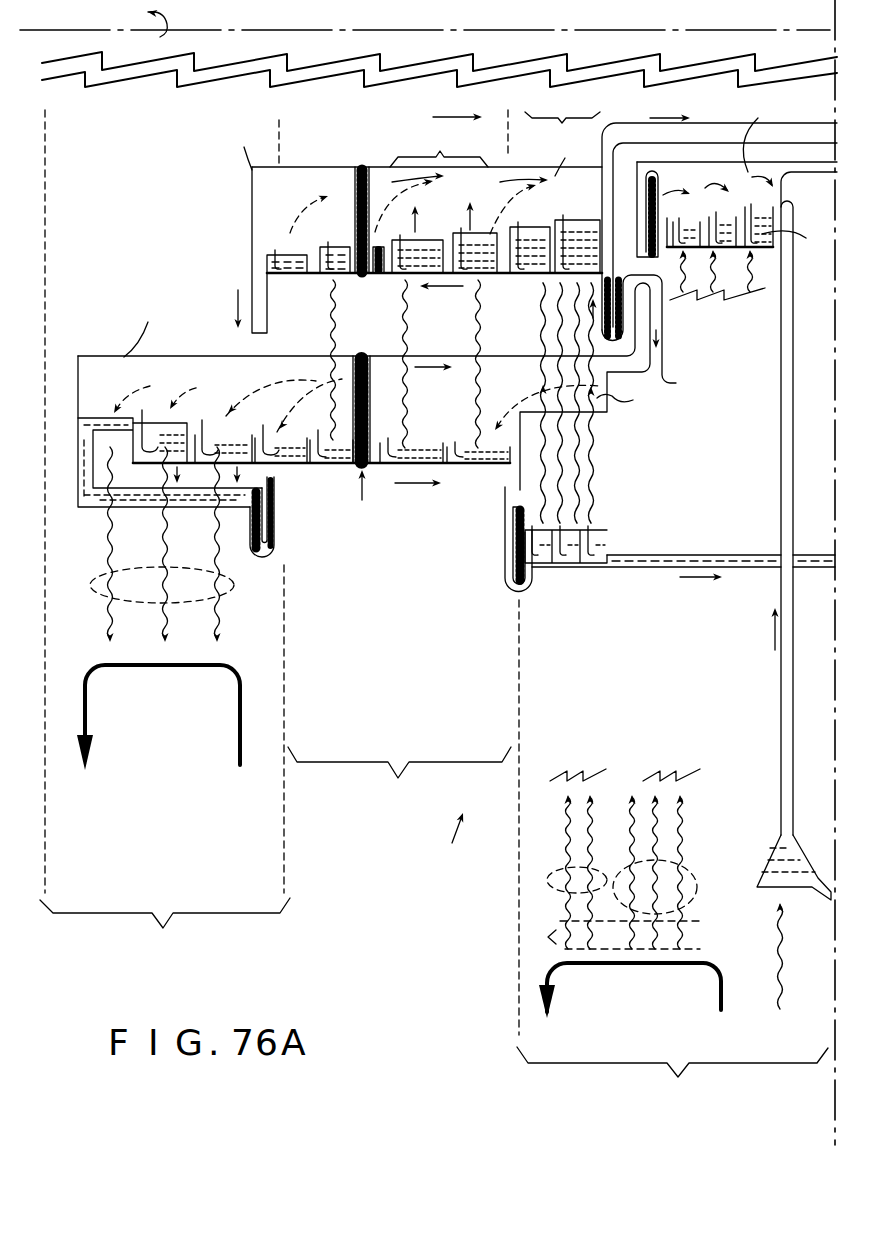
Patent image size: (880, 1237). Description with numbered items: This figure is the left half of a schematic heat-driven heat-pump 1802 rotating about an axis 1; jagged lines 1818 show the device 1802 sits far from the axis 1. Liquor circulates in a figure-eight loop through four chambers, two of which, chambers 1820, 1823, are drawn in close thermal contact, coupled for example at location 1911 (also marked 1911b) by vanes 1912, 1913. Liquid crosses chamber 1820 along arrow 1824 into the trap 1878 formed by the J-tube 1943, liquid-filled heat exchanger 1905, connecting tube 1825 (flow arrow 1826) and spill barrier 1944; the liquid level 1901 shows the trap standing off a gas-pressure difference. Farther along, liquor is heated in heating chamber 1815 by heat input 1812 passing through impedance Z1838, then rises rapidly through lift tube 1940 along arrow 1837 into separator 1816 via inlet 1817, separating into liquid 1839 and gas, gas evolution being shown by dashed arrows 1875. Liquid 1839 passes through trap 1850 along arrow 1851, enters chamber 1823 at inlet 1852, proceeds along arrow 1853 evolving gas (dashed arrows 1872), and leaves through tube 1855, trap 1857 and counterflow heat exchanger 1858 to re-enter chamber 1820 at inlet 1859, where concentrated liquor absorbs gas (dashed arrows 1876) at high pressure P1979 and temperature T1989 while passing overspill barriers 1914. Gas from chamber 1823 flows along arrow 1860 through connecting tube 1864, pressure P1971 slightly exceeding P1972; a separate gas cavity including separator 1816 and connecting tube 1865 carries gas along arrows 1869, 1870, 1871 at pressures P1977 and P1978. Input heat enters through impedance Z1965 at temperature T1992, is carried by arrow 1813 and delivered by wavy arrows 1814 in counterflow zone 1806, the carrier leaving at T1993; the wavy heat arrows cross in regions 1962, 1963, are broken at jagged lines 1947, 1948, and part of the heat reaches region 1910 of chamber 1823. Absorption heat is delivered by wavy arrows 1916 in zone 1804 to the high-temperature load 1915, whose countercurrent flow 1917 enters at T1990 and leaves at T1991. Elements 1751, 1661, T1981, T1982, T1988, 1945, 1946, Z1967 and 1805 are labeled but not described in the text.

The axis 1 is at (136, 32).
The jagged lines 1818 is at (143, 66).
The chamber 1820 is at (193, 292).
The chamber 1823 is at (193, 222).
The vanes 1912 is at (360, 166).
The location 1911 is at (368, 148).
The cup set 1751 is at (470, 197).
The inlet 1852 is at (545, 218).
The dashed arrows 1872 is at (408, 201).
The arrow 1860 is at (452, 107).
The region 1910 is at (562, 108).
The pressure P1972 is at (553, 150).
The temperature point T1982 is at (553, 154).
The pressure P1971 is at (222, 155).
The temperature point T1981 is at (505, 147).
The separator 1816 is at (698, 158).
The arrow 1851 is at (608, 399).
The trap 1850 is at (630, 340).
The connecting tube 1864 is at (827, 144).
The pressure P1977 is at (784, 132).
The flow direction 1661 is at (664, 108).
The arrow 1869 is at (737, 209).
The dashed arrows 1875 is at (719, 234).
The inlet 1817 is at (785, 181).
The liquid 1839 is at (802, 248).
The jagged lines 1947 is at (712, 305).
The spill barrier 1944 is at (571, 297).
The arrow 1870 is at (679, 344).
The connecting tube 1865 is at (676, 383).
The pressure P1978 is at (642, 404).
The temperature point T1988 is at (660, 427).
The arrow 1853 is at (406, 364).
The arrow 1871 is at (430, 378).
The inlet 1859 is at (80, 500).
The dashed arrows 1876 is at (310, 420).
The overspill barriers 1914 is at (195, 408).
The vanes 1913 is at (355, 473).
The trap 1857 is at (280, 538).
The tube 1855 is at (277, 484).
The counterflow heat exchanger 1858 is at (143, 502).
The wavy arrows 1916 is at (130, 585).
The pressure P1979 is at (108, 327).
The temperature T1989 is at (93, 331).
The arrow 1824 is at (417, 495).
The location 1911b is at (365, 498).
The trap 1878 is at (492, 535).
The J-tube 1943 is at (504, 574).
The tube bottom 1946 is at (520, 593).
The liquid level 1901 is at (545, 545).
The cup tube 1945 is at (560, 527).
The heat exchanger 1905 is at (600, 535).
The connecting tube 1825 is at (633, 568).
The arrow 1826 is at (697, 592).
The arrow 1837 is at (744, 630).
The lift tube 1940 is at (781, 708).
The heating chamber 1815 is at (770, 856).
The arrow 1917 is at (133, 675).
The high temperature heat load 1915 is at (196, 733).
The zone Z1967 is at (138, 756).
The temperature T1991 is at (90, 782).
The temperature T1990 is at (235, 780).
The zone 1804 is at (165, 927).
The section 1805 is at (399, 775).
The heat-driven heat-pump 1802 is at (436, 838).
The jagged lines 1948 is at (573, 846).
The region 1962 is at (565, 871).
The region 1963 is at (668, 880).
The wavy arrows 1814 is at (548, 936).
The impedance Z1838 is at (702, 930).
The heat input 1812 is at (630, 990).
The arrow 1813 is at (598, 972).
The heat source impedance Z1965 is at (604, 1007).
The temperature T1993 is at (550, 1029).
The temperature T1992 is at (715, 1029).
The zone 1806 is at (672, 1075).